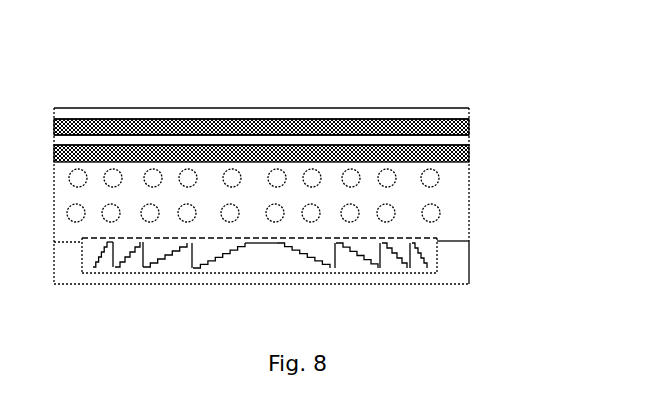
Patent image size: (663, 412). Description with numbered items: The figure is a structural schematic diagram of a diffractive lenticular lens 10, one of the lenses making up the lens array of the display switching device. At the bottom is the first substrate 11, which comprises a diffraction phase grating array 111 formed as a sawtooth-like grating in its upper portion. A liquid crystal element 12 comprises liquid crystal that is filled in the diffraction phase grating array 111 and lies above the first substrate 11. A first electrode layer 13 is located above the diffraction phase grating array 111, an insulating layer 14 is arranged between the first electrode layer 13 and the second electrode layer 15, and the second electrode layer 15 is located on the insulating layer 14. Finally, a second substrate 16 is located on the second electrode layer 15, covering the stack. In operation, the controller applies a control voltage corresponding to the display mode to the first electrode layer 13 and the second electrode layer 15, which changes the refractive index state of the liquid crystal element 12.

The diffractive lenticular lens 10 is at (269, 159).
The first substrate 11 is at (453, 268).
The diffraction phase grating array 111 is at (103, 265).
The liquid crystal element 12 is at (432, 213).
The first electrode layer 13 is at (460, 152).
The insulating layer 14 is at (460, 138).
The second electrode layer 15 is at (458, 125).
The second substrate 16 is at (388, 111).